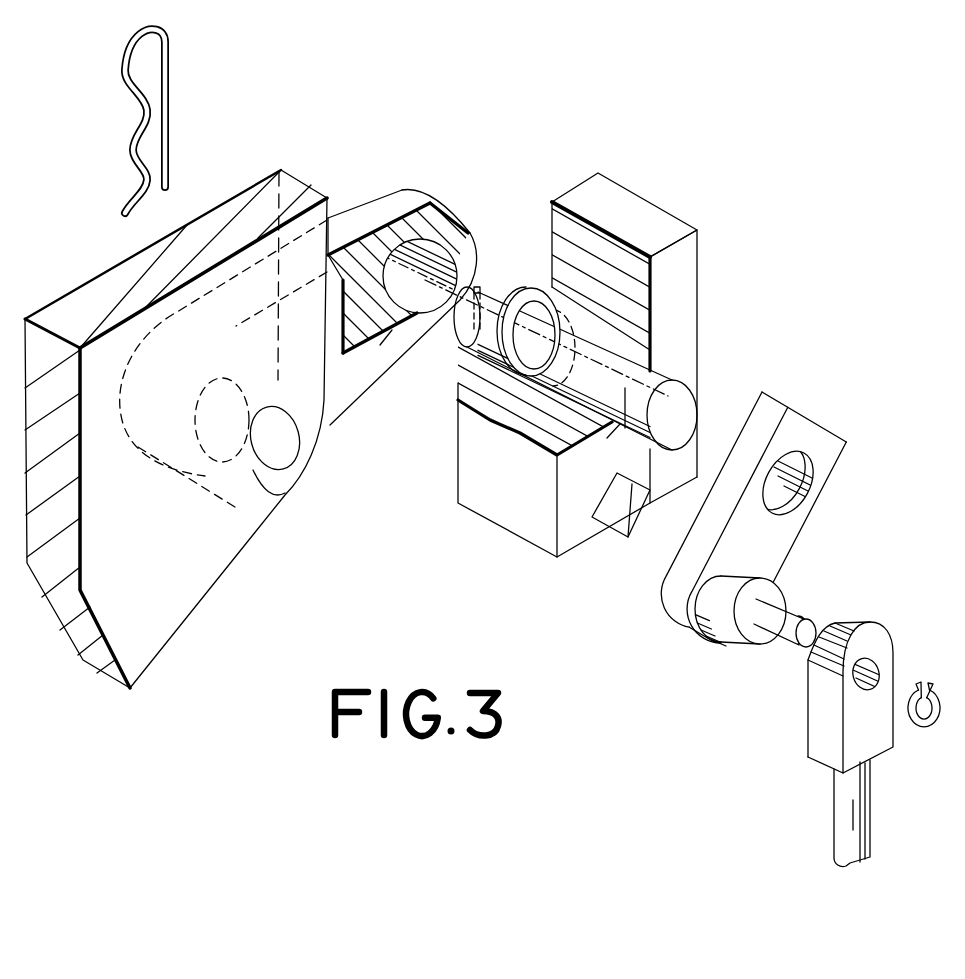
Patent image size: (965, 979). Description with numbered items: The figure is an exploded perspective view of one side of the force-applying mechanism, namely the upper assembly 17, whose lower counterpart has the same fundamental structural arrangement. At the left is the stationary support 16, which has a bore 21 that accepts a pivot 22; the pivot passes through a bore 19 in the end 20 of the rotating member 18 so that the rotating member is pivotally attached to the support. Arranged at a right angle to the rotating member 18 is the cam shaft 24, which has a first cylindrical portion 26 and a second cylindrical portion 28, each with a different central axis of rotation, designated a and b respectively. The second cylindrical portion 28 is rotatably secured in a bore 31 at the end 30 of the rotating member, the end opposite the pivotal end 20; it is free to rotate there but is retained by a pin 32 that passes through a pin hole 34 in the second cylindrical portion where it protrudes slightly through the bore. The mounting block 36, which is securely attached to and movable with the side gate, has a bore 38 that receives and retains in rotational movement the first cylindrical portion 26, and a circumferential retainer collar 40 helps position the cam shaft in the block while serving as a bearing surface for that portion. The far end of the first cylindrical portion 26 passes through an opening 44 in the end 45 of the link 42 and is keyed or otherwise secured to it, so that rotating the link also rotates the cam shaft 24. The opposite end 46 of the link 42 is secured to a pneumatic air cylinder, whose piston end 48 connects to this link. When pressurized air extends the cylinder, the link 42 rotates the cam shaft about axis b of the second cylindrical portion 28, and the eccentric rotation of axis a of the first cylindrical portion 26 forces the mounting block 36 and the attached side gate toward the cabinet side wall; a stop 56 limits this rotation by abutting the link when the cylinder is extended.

The stationary support 16 is at (259, 192).
The upper assembly 17 is at (658, 200).
The rotating member 18 is at (358, 203).
The bore 19 is at (183, 458).
The end 20 is at (147, 447).
The bore 21 is at (266, 480).
The pivot 22 is at (280, 446).
The cam shaft 24 is at (528, 298).
The first cylindrical portion 26 is at (657, 372).
The second cylindrical portion 28 is at (462, 340).
The end 30 is at (441, 220).
The bore 31 is at (420, 320).
The pin 32 is at (168, 48).
The pin hole 34 is at (477, 287).
The mounting block 36 is at (688, 280).
The bore 38 is at (650, 342).
The circumferential retainer collar 40 is at (507, 352).
The link 42 is at (788, 534).
The opening 44 is at (795, 484).
The end 45 is at (768, 412).
The end 46 is at (668, 596).
The end 48 is at (820, 700).
The stop 56 is at (622, 528).